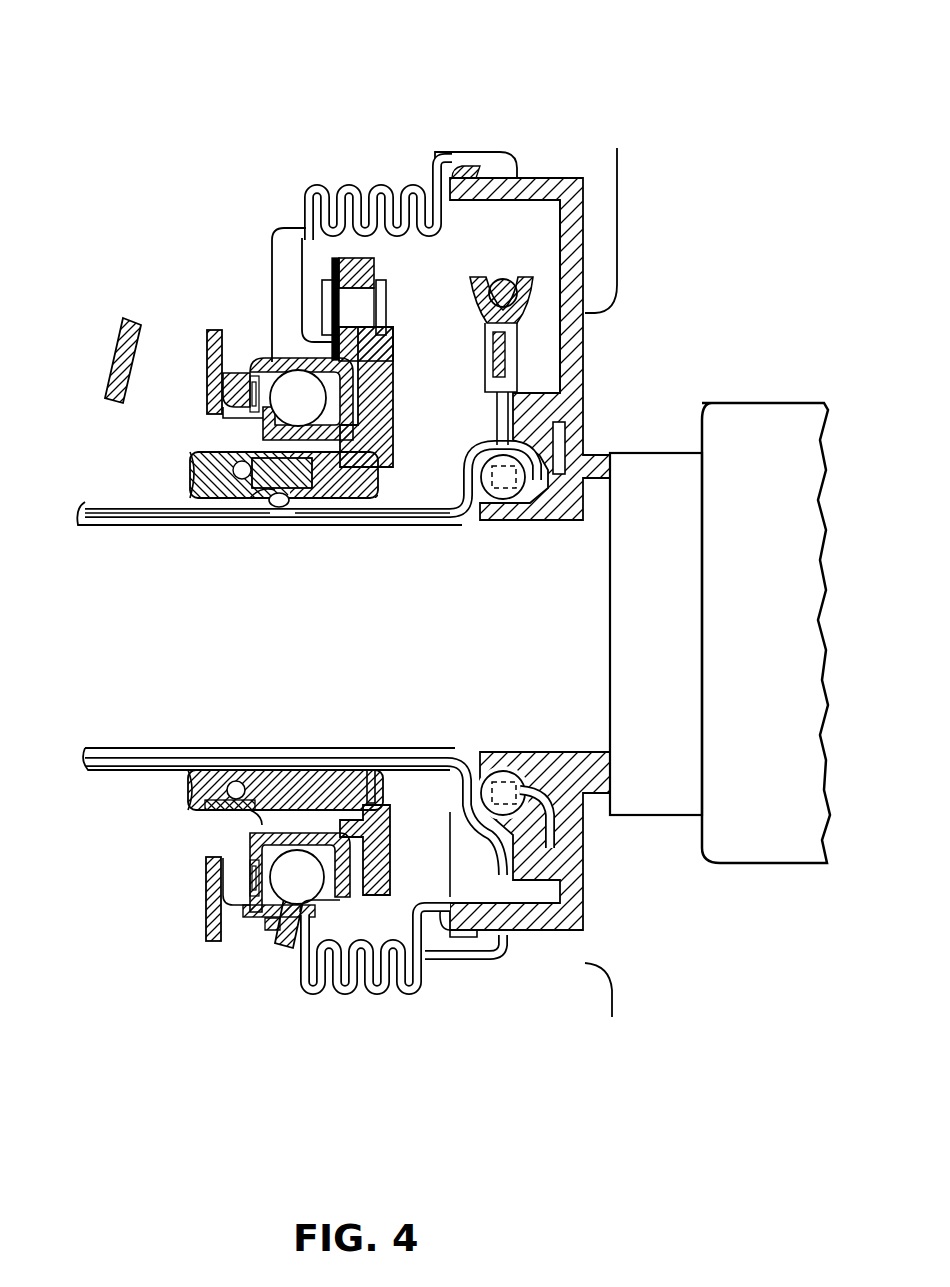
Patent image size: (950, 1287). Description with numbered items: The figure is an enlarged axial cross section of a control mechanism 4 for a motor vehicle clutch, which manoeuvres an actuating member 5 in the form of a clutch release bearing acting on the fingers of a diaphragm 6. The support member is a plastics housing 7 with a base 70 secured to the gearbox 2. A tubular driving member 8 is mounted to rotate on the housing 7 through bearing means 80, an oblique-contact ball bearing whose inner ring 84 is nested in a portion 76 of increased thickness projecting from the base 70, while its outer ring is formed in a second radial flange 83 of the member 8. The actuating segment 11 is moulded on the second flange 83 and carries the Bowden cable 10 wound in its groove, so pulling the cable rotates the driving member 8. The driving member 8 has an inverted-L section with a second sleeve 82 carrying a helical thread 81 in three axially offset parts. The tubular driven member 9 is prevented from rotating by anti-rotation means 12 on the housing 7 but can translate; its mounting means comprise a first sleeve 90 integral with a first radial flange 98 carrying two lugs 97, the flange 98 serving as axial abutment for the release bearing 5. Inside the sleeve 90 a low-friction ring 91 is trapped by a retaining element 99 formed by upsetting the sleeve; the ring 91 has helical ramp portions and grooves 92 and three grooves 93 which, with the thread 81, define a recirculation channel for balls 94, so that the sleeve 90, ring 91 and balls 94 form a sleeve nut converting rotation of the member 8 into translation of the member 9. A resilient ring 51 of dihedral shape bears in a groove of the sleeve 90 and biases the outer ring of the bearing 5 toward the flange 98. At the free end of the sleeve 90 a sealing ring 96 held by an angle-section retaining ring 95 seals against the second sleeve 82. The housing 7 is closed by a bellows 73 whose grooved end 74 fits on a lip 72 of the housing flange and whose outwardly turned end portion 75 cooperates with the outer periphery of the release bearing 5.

The gearbox 2 is at (672, 336).
The control mechanism 4 is at (518, 88).
The actuating member 5 is at (258, 348).
The diaphragm 6 is at (108, 352).
The support member 7 is at (560, 175).
The tubular driving member 8 is at (85, 762).
The tubular driven member 9 is at (356, 968).
The Bowden cable 10 is at (508, 278).
The actuating segment 11 is at (548, 327).
The anti-rotation means 12 is at (332, 263).
The resilient ring 51 is at (345, 448).
The base 70 is at (585, 240).
The lip 72 is at (478, 170).
The bellows 73 is at (282, 235).
The end of the bellows 74 is at (497, 960).
The radial end portion 75 is at (268, 927).
The portion of increased thickness 76 is at (543, 932).
The bearing means 80 is at (547, 807).
The helical thread 81 is at (283, 510).
The second sleeve 82 is at (413, 512).
The second radial flange 83 is at (455, 848).
The inner ring 84 is at (565, 450).
The first sleeve 90 is at (257, 820).
The ring 91 is at (342, 772).
The grooves 92 is at (270, 508).
The grooves 93 is at (235, 788).
The balls 94 is at (188, 790).
The retaining ring 95 is at (190, 468).
The sealing ring 96 is at (190, 492).
The lugs 97 is at (376, 266).
The first radial flange 98 is at (392, 855).
The retaining element 99 is at (378, 790).